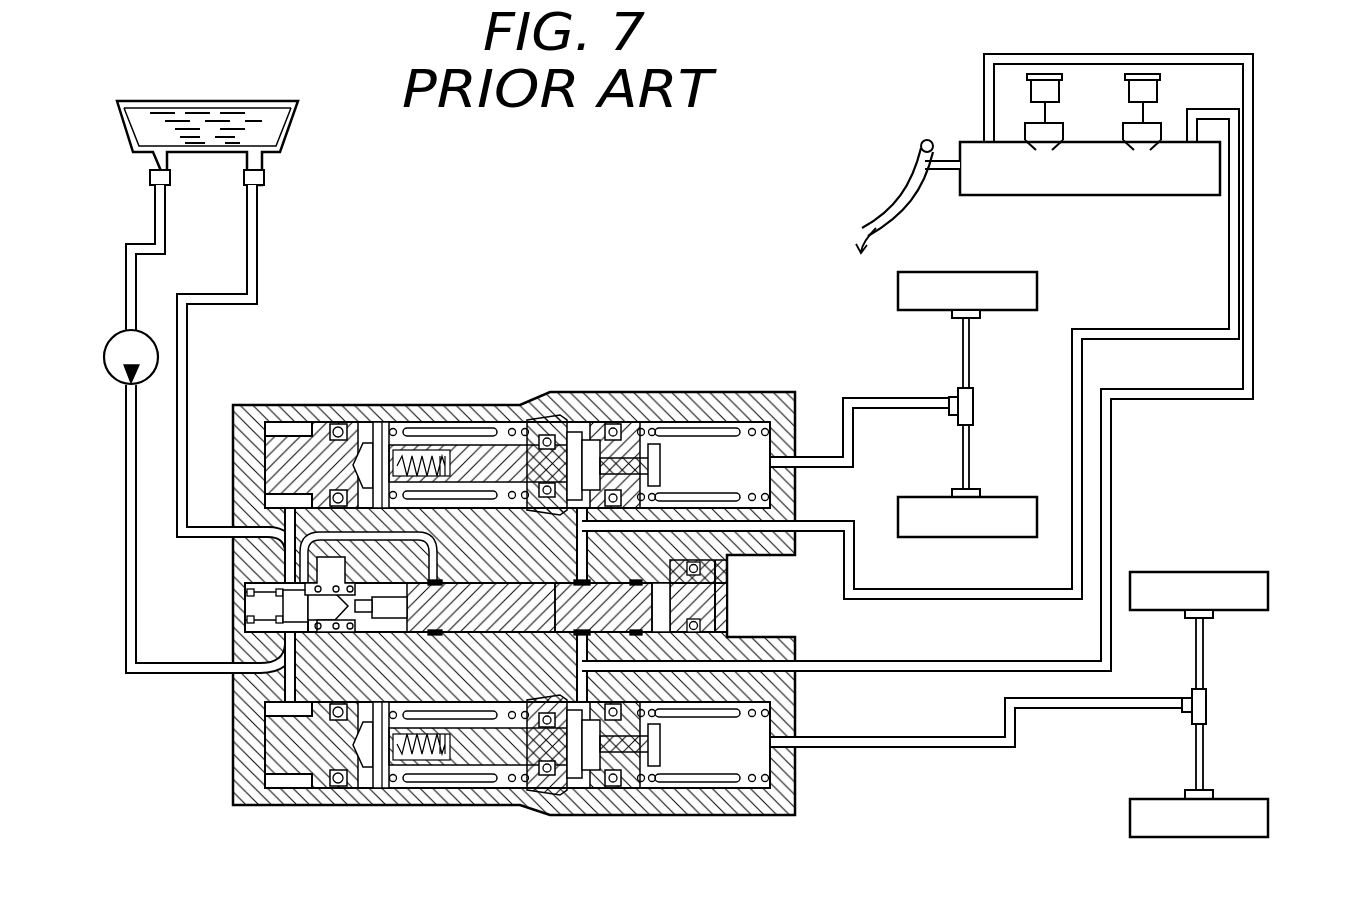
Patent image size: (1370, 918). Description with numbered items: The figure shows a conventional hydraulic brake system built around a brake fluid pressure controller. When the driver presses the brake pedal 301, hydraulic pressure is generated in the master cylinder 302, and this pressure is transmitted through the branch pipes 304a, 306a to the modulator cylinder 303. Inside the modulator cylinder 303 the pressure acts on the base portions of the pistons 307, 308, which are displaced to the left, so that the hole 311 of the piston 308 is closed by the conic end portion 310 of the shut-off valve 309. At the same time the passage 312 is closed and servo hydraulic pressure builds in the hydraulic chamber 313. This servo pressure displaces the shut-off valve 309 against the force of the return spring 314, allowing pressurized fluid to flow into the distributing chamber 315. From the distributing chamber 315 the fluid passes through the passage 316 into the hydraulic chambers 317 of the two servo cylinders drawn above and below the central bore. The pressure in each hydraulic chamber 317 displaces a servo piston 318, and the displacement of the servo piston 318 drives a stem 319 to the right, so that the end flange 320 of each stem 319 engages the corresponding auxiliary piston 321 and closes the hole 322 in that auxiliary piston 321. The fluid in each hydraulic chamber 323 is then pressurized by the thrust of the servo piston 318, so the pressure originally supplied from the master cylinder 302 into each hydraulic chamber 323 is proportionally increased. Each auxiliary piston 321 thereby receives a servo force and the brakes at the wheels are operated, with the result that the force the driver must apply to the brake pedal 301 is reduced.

The brake pedal 301 is at (898, 197).
The master cylinder 302 is at (1152, 197).
The modulator cylinder 303 is at (696, 382).
The branch pipe 304a is at (1245, 210).
The branch pipe 306a is at (1253, 320).
The piston 307 is at (635, 620).
The piston 308 is at (510, 618).
The shut-off valve 309 is at (330, 636).
The conic end portion 310 is at (372, 614).
The hole 311 is at (410, 636).
The passage 312 is at (262, 227).
The hydraulic chamber 313 is at (305, 570).
The return spring 314 is at (262, 640).
The distributing chamber 315 is at (257, 607).
The passage 316 is at (275, 450).
The hydraulic chamber 317 is at (284, 424).
The servo piston 318 is at (353, 450).
The stem 319 is at (483, 450).
The end flange 320 is at (576, 425).
The auxiliary piston 321 is at (628, 455).
The hole 322 is at (662, 462).
The hydraulic chamber 323 is at (717, 445).